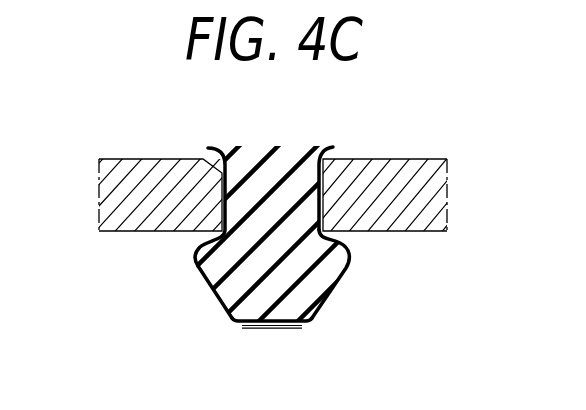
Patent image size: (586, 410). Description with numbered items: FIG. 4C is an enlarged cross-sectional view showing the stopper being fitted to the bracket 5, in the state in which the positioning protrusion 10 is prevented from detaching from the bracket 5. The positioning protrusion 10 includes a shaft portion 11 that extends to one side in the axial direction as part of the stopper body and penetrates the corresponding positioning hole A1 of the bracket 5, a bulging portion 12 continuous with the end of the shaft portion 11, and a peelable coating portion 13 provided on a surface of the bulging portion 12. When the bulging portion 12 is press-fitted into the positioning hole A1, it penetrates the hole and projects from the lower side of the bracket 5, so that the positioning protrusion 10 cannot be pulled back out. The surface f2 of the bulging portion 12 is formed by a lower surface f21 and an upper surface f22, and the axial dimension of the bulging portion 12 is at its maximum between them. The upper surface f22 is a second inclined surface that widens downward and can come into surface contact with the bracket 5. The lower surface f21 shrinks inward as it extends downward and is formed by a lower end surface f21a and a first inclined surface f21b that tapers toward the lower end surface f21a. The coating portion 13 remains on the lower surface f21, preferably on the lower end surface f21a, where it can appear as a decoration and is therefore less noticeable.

The bracket 5 is at (137, 173).
The positioning hole A1 is at (214, 157).
The positioning protrusion 10 is at (475, 252).
The shaft portion 11 is at (300, 207).
The bulging portion 12 is at (290, 272).
The coating portion 13 is at (286, 330).
The surface of bulging portion f2 is at (70, 273).
The upper surface f22 is at (207, 246).
The lower surface f21 is at (123, 298).
The first inclined surface f21b is at (220, 300).
The lower end surface f21a is at (258, 329).